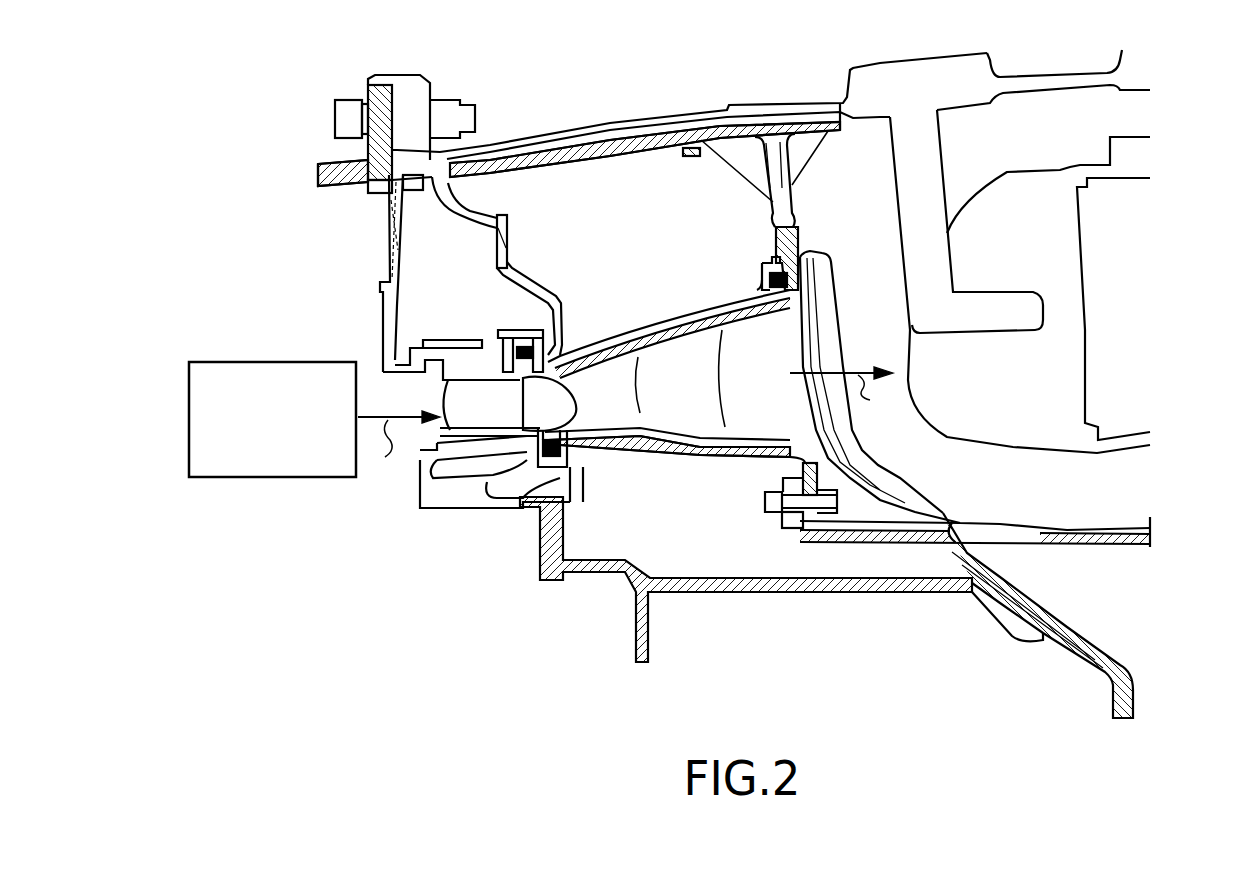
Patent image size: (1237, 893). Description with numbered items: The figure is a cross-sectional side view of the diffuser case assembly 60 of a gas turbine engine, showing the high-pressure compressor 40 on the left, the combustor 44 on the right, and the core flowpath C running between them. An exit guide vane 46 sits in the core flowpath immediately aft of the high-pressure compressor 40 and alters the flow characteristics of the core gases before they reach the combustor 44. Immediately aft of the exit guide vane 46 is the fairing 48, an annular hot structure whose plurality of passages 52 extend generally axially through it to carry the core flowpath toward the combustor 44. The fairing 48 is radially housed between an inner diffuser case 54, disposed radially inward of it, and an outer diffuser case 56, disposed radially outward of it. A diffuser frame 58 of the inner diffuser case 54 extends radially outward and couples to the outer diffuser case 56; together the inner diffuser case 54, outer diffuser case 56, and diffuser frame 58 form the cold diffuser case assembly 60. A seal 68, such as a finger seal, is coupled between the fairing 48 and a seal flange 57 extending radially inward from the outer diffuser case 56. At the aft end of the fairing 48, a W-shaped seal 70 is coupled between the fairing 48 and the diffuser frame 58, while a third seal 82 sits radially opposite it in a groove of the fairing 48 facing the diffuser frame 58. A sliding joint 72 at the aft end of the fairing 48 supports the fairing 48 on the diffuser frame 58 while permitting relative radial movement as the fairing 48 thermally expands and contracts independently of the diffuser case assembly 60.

The high-pressure compressor 40 is at (260, 468).
The combustor 44 is at (1172, 130).
The exit guide vane 46 is at (475, 421).
The fairing 48 is at (668, 323).
The passages 52 is at (668, 394).
The inner diffuser case 54 is at (1108, 545).
The outer diffuser case 56 is at (567, 147).
The seal flange 57 is at (507, 238).
The diffuser frame 58 is at (873, 463).
The diffuser case assembly 60 is at (754, 66).
The seal 68 is at (537, 297).
The seal 70 is at (763, 273).
The sliding joint 72 is at (790, 560).
The seal 82 is at (800, 472).